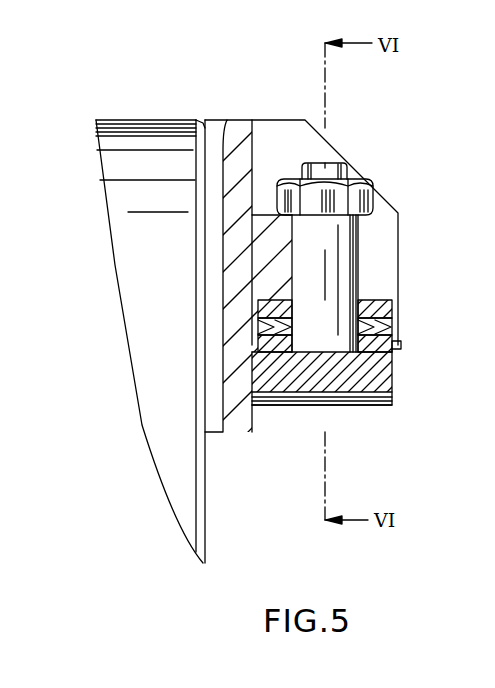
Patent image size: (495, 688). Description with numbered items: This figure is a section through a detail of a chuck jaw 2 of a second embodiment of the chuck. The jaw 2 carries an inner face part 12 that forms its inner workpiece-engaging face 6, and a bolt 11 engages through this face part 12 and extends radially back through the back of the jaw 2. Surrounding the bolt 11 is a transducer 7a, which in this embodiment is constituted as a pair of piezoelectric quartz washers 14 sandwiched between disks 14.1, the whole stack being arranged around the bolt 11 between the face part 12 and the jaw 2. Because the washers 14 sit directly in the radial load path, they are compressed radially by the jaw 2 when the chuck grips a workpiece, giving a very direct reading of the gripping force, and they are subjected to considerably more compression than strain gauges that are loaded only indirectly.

The jaw 2 is at (243, 127).
The workpiece-engaging face 6 is at (295, 410).
The transducer 7a is at (392, 318).
The bolt 11 is at (337, 262).
The inner face part 12 is at (346, 378).
The piezoelectric quartz washer 14 is at (410, 345).
The disk 14.1 is at (380, 300).